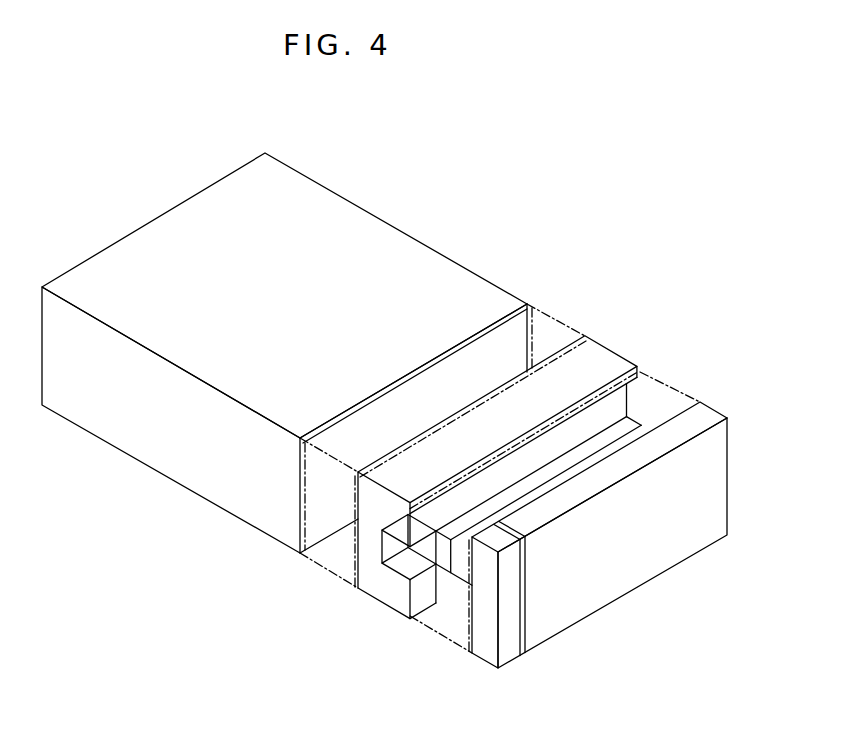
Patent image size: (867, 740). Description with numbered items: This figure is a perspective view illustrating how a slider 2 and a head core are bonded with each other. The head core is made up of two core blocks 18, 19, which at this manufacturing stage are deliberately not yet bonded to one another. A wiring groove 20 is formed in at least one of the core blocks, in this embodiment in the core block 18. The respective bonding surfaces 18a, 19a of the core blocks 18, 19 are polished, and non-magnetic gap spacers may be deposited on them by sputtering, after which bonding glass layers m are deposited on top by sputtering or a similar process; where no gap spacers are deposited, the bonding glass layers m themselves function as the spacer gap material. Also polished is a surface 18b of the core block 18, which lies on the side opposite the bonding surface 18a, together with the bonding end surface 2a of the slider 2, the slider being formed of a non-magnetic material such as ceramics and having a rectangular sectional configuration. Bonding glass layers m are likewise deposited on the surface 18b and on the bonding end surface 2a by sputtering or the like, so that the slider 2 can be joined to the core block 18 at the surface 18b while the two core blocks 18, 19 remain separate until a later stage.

The slider 2 is at (456, 280).
The bonding end surface 2a is at (533, 318).
The core block 18 is at (390, 598).
The bonding surface 18a is at (626, 393).
The surface 18b is at (563, 348).
The core block 19 is at (486, 660).
The bonding surface 19a is at (681, 399).
The wiring groove 20 is at (392, 548).
The bonding glass layers m is at (436, 357).